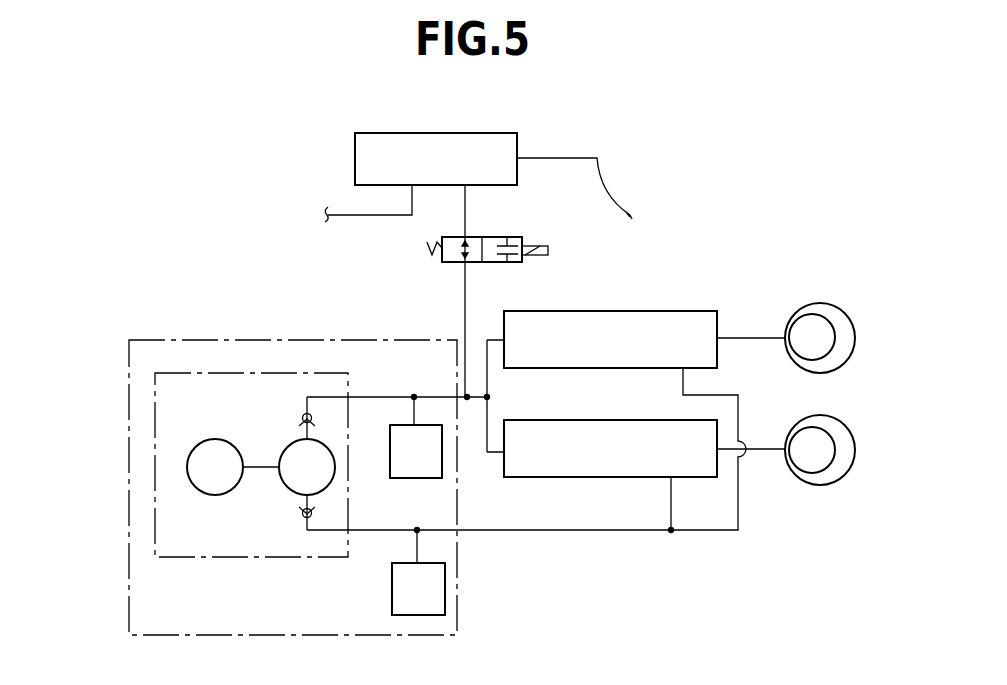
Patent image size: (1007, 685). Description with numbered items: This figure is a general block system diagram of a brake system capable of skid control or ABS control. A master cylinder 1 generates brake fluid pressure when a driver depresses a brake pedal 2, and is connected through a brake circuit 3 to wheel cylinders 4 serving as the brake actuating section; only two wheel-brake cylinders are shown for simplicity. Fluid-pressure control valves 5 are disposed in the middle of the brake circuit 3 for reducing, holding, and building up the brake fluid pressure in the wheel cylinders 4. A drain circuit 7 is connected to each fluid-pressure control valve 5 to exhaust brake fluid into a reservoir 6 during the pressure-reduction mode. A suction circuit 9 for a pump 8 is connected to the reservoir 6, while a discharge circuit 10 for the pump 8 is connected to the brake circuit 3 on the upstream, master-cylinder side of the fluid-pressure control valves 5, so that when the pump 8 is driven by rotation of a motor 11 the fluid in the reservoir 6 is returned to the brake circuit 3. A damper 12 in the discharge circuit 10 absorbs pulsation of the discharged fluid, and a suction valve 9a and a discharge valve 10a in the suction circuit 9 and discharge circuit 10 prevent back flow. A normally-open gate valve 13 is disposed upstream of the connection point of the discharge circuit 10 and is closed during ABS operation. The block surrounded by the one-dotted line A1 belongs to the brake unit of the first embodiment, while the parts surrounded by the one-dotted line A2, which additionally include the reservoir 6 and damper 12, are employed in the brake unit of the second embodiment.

The master cylinder 1 is at (465, 133).
The brake pedal 2 is at (602, 177).
The brake circuit 3 is at (465, 208).
The wheel cylinders 4 is at (808, 416).
The fluid-pressure control valves 5 is at (652, 368).
The reservoir 6 is at (392, 596).
The drain circuit 7 is at (604, 531).
The pump 8 is at (292, 491).
The suction circuit 9 is at (327, 531).
The suction valve 9a is at (300, 518).
The discharge circuit 10 is at (381, 395).
The discharge valve 10a is at (301, 416).
The motor 11 is at (192, 487).
The damper 12 is at (415, 478).
The gate valve 13 is at (508, 236).
The one-dotted line A1 is at (155, 478).
The one-dotted line A2 is at (128, 447).